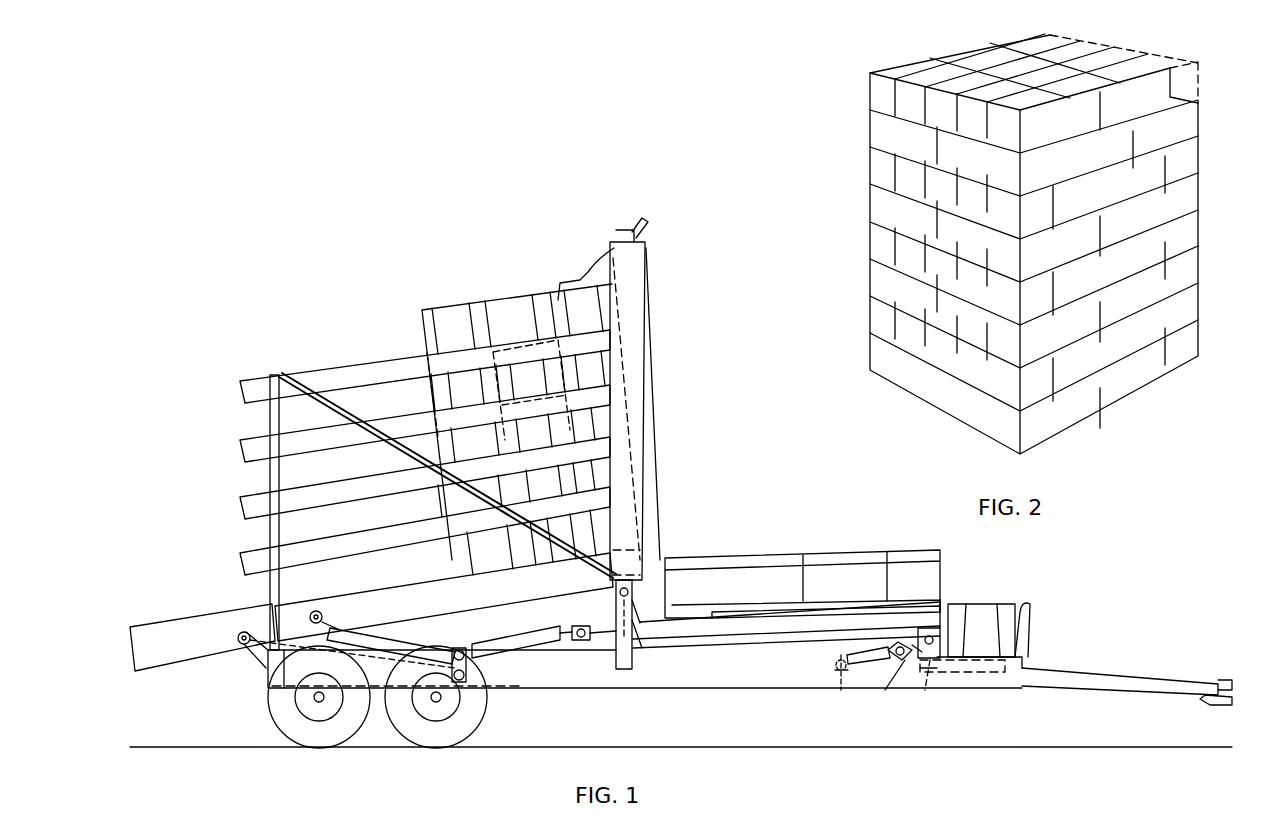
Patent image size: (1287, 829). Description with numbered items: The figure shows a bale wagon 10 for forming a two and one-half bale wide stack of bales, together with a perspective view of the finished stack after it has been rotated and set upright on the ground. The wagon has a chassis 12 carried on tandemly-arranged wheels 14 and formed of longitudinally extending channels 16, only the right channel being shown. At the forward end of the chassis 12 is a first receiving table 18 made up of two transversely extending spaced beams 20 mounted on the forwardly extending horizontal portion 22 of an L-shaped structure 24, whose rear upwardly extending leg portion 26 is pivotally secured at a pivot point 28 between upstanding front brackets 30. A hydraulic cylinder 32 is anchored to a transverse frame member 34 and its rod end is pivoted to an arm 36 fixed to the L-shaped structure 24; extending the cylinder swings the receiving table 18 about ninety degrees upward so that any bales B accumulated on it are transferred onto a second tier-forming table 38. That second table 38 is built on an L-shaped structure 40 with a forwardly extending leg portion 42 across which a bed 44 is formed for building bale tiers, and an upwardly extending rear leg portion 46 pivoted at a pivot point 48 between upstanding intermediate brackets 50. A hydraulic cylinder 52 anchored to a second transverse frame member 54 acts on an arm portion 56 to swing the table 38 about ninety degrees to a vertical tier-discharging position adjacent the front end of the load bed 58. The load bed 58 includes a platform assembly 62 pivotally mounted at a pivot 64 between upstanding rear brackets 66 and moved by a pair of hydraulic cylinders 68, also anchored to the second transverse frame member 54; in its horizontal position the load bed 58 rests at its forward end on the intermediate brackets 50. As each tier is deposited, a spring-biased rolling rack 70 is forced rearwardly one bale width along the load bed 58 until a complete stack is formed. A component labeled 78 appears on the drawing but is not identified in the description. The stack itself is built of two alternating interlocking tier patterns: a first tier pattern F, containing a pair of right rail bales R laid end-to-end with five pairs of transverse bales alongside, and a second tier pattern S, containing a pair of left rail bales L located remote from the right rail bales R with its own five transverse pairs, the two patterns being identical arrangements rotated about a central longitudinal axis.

In FIG. 1, the bale wagon 10 is at (708, 425).
In FIG. 1, the chassis 12 is at (762, 690).
In FIG. 1, the wheels 14 is at (412, 746).
In FIG. 1, the longitudinally extending channels 16 is at (700, 688).
In FIG. 1, the first receiving table 18 is at (1020, 665).
In FIG. 1, the transversely extending spaced beams 20 is at (997, 606).
In FIG. 1, the forwardly extending horizontal portion 22 is at (968, 672).
In FIG. 1, the L-shaped structure 24 is at (932, 688).
In FIG. 1, the rear upwardly extending leg portion 26 is at (920, 655).
In FIG. 1, the pivot point 28 is at (932, 632).
In FIG. 1, the upstanding front brackets 30 is at (923, 640).
In FIG. 1, the hydraulic cylinder 32 is at (858, 656).
In FIG. 1, the transverse frame member 34 is at (843, 675).
In FIG. 1, the arm 36 is at (900, 660).
In FIG. 1, the second tier-forming table 38 is at (790, 638).
In FIG. 1, the L-shaped structure 40 is at (641, 650).
In FIG. 1, the forwardly extending leg portion 42 is at (717, 640).
In FIG. 1, the bed 44 is at (653, 622).
In FIG. 1, the upwardly extending rear leg portion 46 is at (640, 623).
In FIG. 1, the pivot point 48 is at (619, 592).
In FIG. 1, the upstanding intermediate brackets 50 is at (621, 670).
In FIG. 1, the hydraulic cylinder 52 is at (490, 640).
In FIG. 1, the second transverse frame member 54 is at (470, 670).
In FIG. 1, the arm portion 56 is at (585, 625).
In FIG. 1, the load bed 58 is at (178, 662).
In FIG. 1, the platform assembly 62 is at (400, 586).
In FIG. 1, the pivot 64 is at (240, 634).
In FIG. 1, the upstanding rear brackets 66 is at (252, 652).
In FIG. 1, the hydraulic cylinders 68 is at (405, 645).
In FIG. 1, the rolling rack 70 is at (424, 398).
In FIG. 1, the side board 78 is at (814, 600).
In FIG. 1, the bales B is at (1013, 604).
In FIG. 1, the left rail bales L is at (778, 555).
In FIG. 2, the left rail bales L is at (1200, 300).
In FIG. 1, the first tier pattern F is at (456, 304).
In FIG. 2, the first tier pattern F is at (1204, 116).
In FIG. 1, the second tier pattern S is at (512, 292).
In FIG. 2, the second tier pattern S is at (866, 160).
In FIG. 1, the right rail bales R is at (442, 305).
In FIG. 2, the right rail bales R is at (1035, 452).